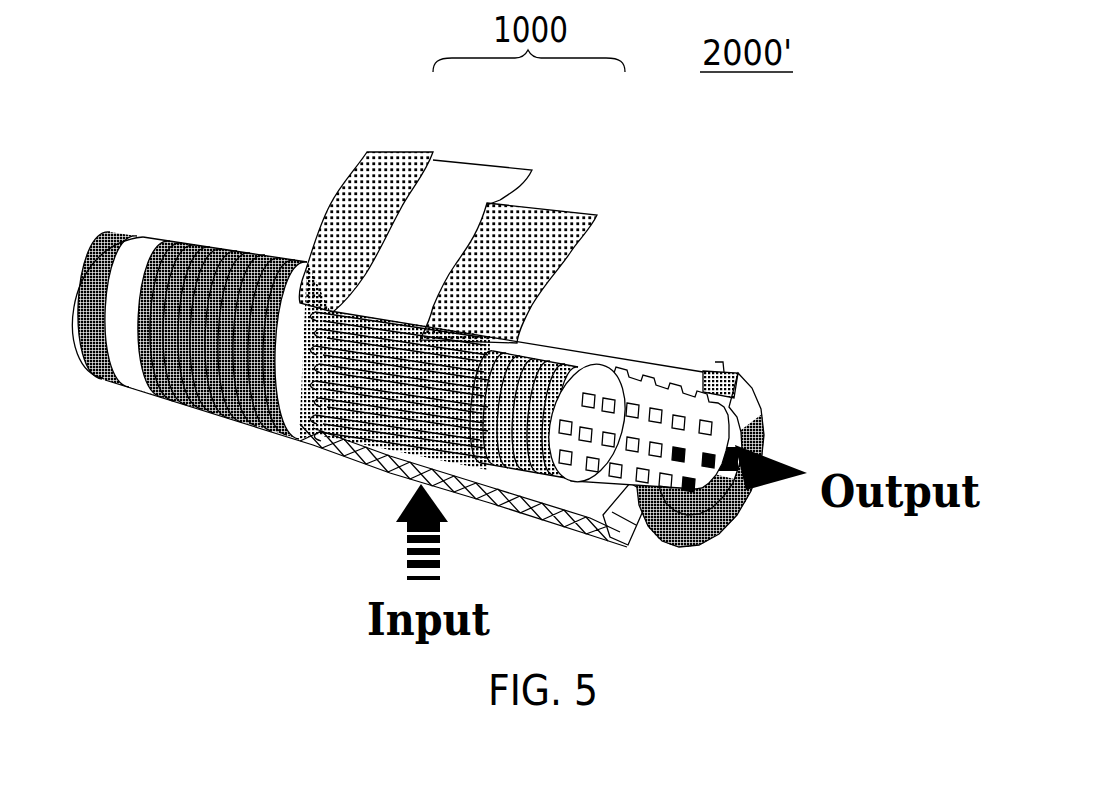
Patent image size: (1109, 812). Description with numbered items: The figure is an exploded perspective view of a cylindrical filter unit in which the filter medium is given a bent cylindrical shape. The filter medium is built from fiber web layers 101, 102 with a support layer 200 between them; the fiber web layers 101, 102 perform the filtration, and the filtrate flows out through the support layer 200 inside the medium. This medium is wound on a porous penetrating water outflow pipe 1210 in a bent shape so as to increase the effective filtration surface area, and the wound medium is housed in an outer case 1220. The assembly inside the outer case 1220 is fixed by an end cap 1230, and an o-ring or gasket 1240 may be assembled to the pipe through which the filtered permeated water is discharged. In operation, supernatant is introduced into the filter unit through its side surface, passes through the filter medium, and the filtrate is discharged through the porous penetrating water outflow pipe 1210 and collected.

The fiber web layer 101 is at (368, 152).
The support layer 200 is at (487, 167).
The fiber web layer 102 is at (568, 216).
The porous penetrating water outflow pipe 1210 is at (577, 360).
The outer case 1220 is at (215, 418).
The end cap 1230 is at (617, 537).
The o-ring or gasket 1240 is at (717, 533).